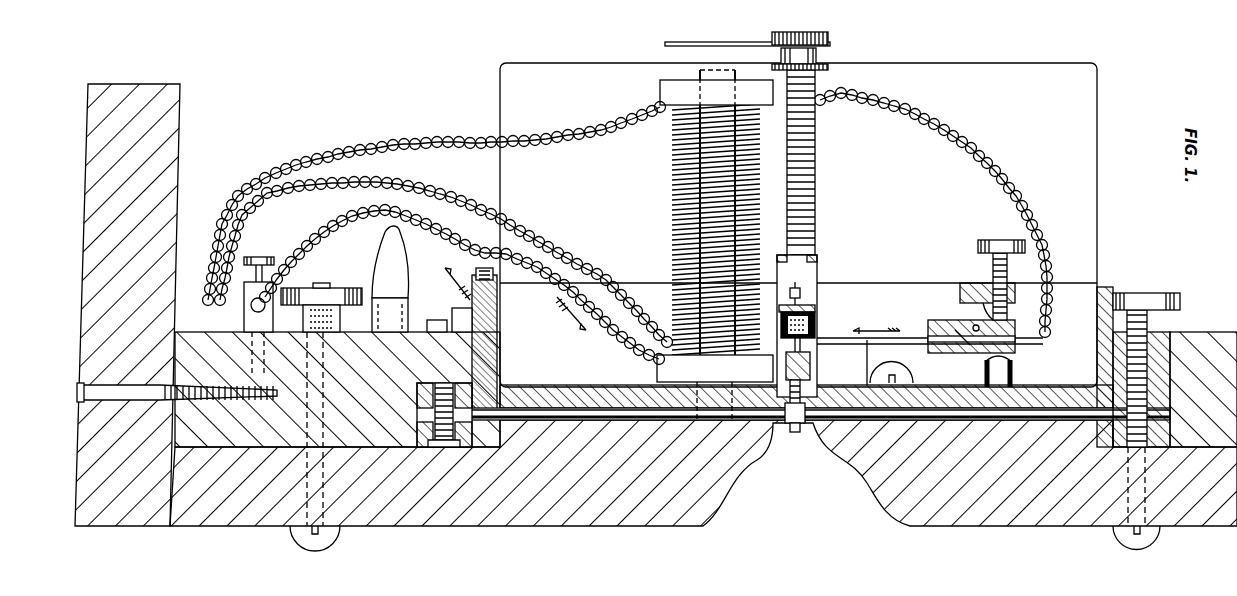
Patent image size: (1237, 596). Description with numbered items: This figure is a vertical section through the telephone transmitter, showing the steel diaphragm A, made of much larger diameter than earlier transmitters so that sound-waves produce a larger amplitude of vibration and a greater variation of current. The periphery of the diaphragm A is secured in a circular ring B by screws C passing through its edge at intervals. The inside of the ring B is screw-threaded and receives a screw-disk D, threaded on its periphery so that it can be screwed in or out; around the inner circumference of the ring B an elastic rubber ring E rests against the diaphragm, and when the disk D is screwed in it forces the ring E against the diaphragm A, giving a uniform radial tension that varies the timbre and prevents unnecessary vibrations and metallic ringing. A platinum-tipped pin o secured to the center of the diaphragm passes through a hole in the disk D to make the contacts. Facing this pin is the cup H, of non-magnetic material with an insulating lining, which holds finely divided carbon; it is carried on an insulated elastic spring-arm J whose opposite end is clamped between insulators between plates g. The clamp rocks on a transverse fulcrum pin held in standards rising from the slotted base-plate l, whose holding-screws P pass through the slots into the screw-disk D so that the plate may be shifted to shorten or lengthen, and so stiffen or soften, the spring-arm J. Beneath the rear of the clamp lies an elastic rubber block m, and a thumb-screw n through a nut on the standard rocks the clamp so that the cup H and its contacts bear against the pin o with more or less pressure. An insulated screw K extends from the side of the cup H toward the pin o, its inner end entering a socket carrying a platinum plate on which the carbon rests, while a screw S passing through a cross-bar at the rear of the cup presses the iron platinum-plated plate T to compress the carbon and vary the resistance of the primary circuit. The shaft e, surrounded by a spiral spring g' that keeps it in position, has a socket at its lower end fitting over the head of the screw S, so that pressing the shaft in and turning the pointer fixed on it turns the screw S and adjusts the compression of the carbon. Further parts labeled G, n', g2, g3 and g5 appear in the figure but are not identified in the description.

The diaphragm A is at (575, 418).
The circular ring or disk B is at (412, 330).
The screws C is at (443, 440).
The screw-disk D is at (563, 400).
The elastic rubber ring E is at (490, 395).
The spiral spring G is at (672, 196).
The cup H is at (808, 297).
The screw S is at (788, 293).
The iron platinum-plated plate T is at (815, 320).
The insulated screw K is at (810, 357).
The pin o is at (805, 372).
The spring-arm J is at (867, 352).
The holding-screws P is at (897, 375).
The base-plate l is at (935, 352).
The elastic rubber tube or block m is at (1013, 373).
The thumb-screw n is at (997, 338).
The clamp screw n' is at (997, 280).
The shaft e is at (815, 155).
The spiral spring g' is at (823, 189).
The plates g is at (747, 37).
The lock nut g2 is at (781, 58).
The washer g3 is at (798, 77).
The pivot g5 is at (935, 330).